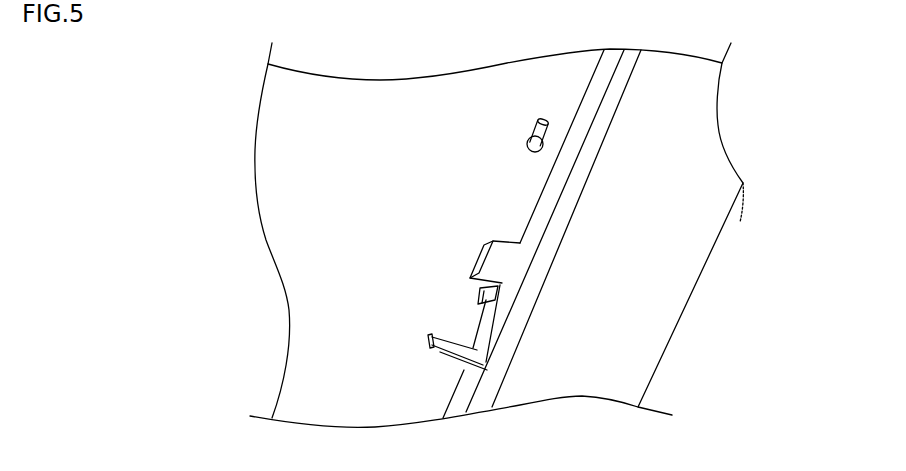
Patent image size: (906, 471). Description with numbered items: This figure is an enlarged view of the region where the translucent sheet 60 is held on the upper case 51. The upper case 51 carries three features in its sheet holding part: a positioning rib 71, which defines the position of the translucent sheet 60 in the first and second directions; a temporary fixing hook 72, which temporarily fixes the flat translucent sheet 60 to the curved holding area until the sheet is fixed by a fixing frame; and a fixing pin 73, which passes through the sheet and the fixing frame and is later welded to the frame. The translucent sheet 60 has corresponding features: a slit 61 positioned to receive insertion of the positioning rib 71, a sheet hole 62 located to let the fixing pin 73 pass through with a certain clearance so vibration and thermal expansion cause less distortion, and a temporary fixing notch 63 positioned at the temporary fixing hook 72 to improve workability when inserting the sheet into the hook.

The upper case 51 is at (706, 263).
The translucent sheet 60 is at (272, 172).
The slit 61 is at (428, 337).
The sheet hole 62 is at (559, 152).
The temporary fixing notch 63 is at (483, 318).
The positioning rib 71 is at (452, 350).
The temporary fixing hook 72 is at (500, 262).
The fixing pin 73 is at (547, 130).